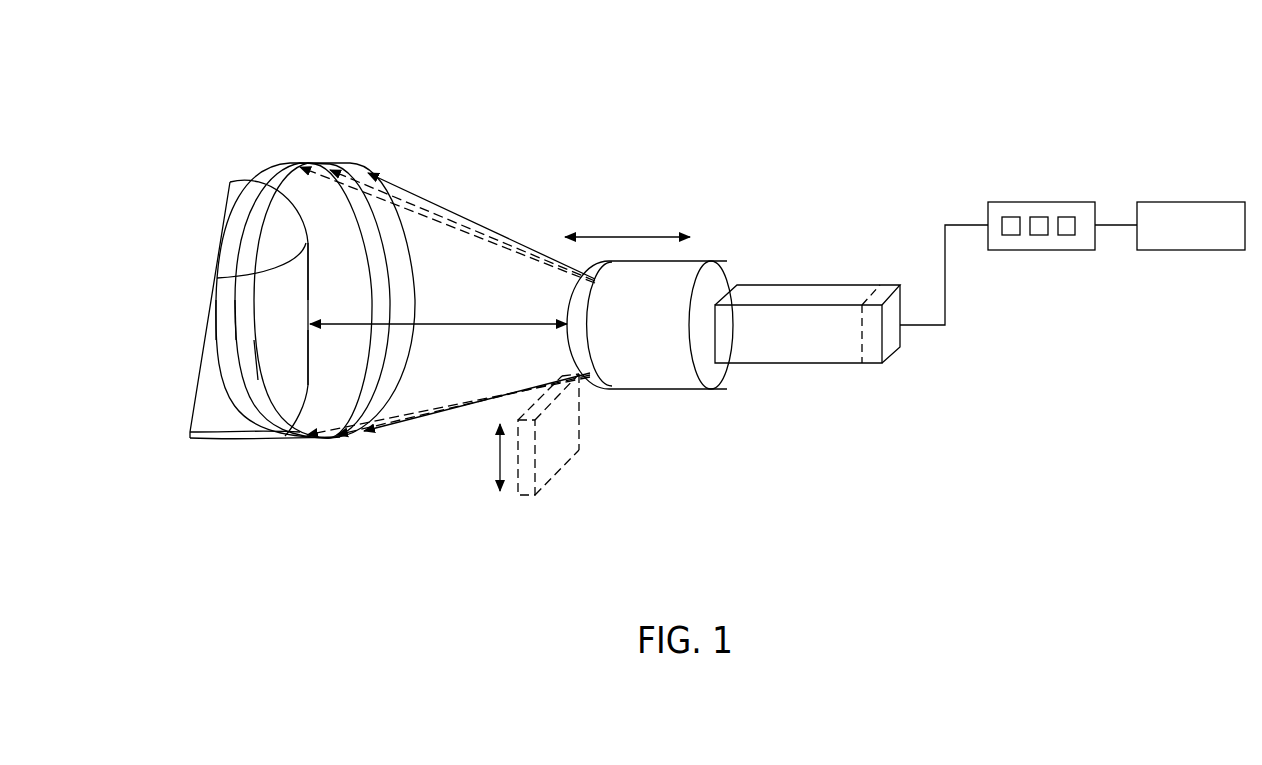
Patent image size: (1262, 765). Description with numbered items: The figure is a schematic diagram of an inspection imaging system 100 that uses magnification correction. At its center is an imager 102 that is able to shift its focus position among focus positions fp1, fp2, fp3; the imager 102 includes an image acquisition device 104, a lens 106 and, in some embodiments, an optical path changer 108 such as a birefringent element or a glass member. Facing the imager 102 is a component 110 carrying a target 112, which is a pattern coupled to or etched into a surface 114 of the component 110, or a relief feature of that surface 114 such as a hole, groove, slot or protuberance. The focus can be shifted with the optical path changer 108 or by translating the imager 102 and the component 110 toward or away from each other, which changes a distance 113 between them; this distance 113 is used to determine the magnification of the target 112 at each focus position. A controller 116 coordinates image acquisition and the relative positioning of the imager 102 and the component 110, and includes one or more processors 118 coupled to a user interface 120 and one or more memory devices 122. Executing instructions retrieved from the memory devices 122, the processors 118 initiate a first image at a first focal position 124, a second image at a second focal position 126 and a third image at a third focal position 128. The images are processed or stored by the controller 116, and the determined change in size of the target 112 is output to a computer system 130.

The inspection imaging system 100 is at (886, 41).
The imager 102 is at (790, 246).
The image acquisition device 104 is at (673, 391).
The lens 106 is at (605, 261).
The optical path changer 108 is at (556, 470).
The component 110 is at (278, 240).
The target 112 is at (310, 293).
The distance 113 is at (453, 325).
The surface 114 is at (310, 338).
The controller 116 is at (1035, 202).
The processors 118 is at (1038, 237).
The user interface 120 is at (1008, 237).
The memory devices 122 is at (1065, 237).
The first focal position 124 is at (268, 374).
The second focal position 126 is at (239, 348).
The third focal position 128 is at (215, 321).
The computer system 130 is at (1185, 202).
The focus position fp1 is at (350, 163).
The focus position fp2 is at (313, 163).
The focus position fp3 is at (291, 163).